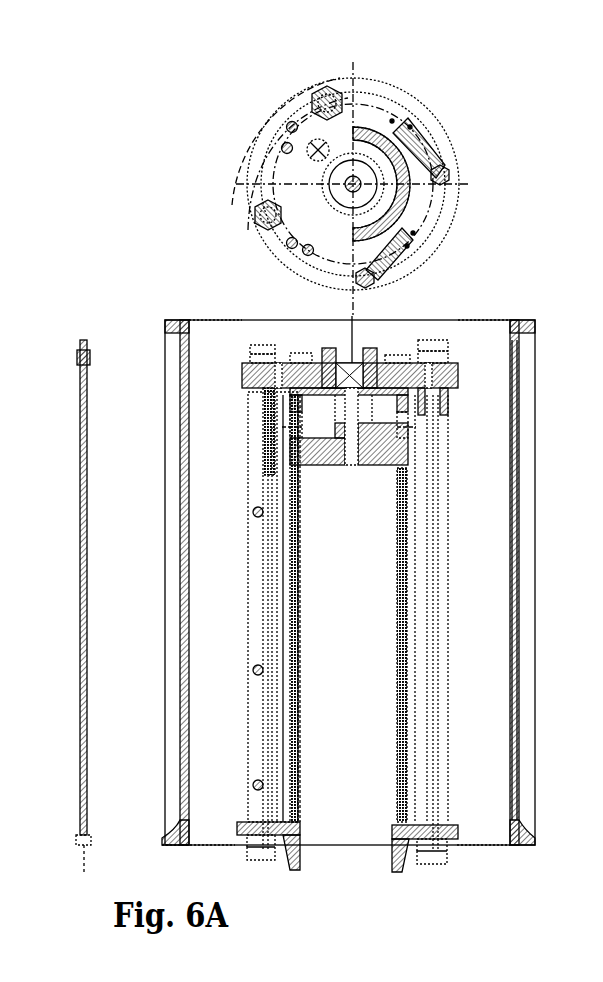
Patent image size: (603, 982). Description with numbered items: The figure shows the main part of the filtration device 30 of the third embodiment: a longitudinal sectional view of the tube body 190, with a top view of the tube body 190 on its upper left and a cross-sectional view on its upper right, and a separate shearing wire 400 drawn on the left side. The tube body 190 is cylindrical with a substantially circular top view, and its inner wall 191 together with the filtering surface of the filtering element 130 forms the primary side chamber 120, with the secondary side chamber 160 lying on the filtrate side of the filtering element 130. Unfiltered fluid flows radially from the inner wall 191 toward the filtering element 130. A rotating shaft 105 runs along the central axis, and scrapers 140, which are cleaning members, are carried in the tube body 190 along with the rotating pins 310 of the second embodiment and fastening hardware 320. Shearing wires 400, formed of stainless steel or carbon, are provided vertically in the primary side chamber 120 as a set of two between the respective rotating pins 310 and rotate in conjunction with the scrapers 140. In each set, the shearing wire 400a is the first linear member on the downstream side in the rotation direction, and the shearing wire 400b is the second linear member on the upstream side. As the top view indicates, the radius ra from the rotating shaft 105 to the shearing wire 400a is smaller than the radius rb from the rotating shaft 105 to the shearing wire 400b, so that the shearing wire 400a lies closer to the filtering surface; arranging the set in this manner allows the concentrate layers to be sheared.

The filtration device 30 is at (156, 323).
The rotating shaft 105 is at (352, 316).
The primary side chamber 120 is at (228, 690).
The filtering element 130 is at (366, 128).
The scrapers 140 is at (422, 145).
The secondary side chamber 160 is at (327, 627).
The tube body 190 is at (512, 614).
The inner wall 191 is at (510, 670).
The rotating pins 310 is at (450, 177).
The hex bolt 320 is at (312, 102).
The shearing wires 400 is at (262, 498).
The shearing wire 400a is at (283, 152).
The shearing wire 400b is at (287, 131).
The radius ra is at (353, 184).
The radius rb is at (353, 184).